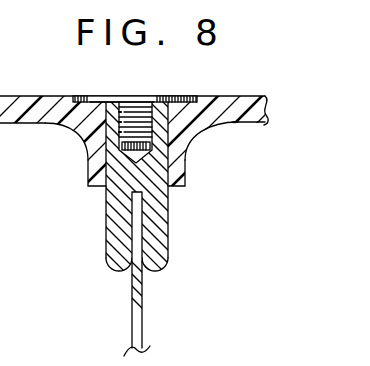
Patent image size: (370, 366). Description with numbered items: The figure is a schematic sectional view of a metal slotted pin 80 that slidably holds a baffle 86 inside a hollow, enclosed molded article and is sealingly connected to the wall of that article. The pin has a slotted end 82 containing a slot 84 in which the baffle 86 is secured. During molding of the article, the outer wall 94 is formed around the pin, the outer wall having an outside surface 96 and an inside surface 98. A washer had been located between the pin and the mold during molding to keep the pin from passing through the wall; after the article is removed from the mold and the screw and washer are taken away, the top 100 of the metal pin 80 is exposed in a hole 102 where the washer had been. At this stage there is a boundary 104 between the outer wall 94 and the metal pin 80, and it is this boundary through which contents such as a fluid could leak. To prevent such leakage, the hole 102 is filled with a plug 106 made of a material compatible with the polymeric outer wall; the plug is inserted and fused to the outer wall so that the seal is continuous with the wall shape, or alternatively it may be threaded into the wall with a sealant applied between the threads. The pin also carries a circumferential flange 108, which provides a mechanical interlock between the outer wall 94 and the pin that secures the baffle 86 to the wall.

The metal slotted pin 80 is at (150, 176).
The slotted end 82 is at (154, 268).
The slot 84 is at (132, 233).
The baffle 86 is at (133, 300).
The outer wall 94 is at (252, 113).
The outside surface 96 is at (225, 96).
The inside surface 98 is at (240, 122).
The top of metal pin 100 is at (100, 96).
The hole 102 is at (115, 96).
The boundary 104 is at (205, 137).
The plug 106 is at (158, 96).
The circumferential flange 108 is at (90, 185).